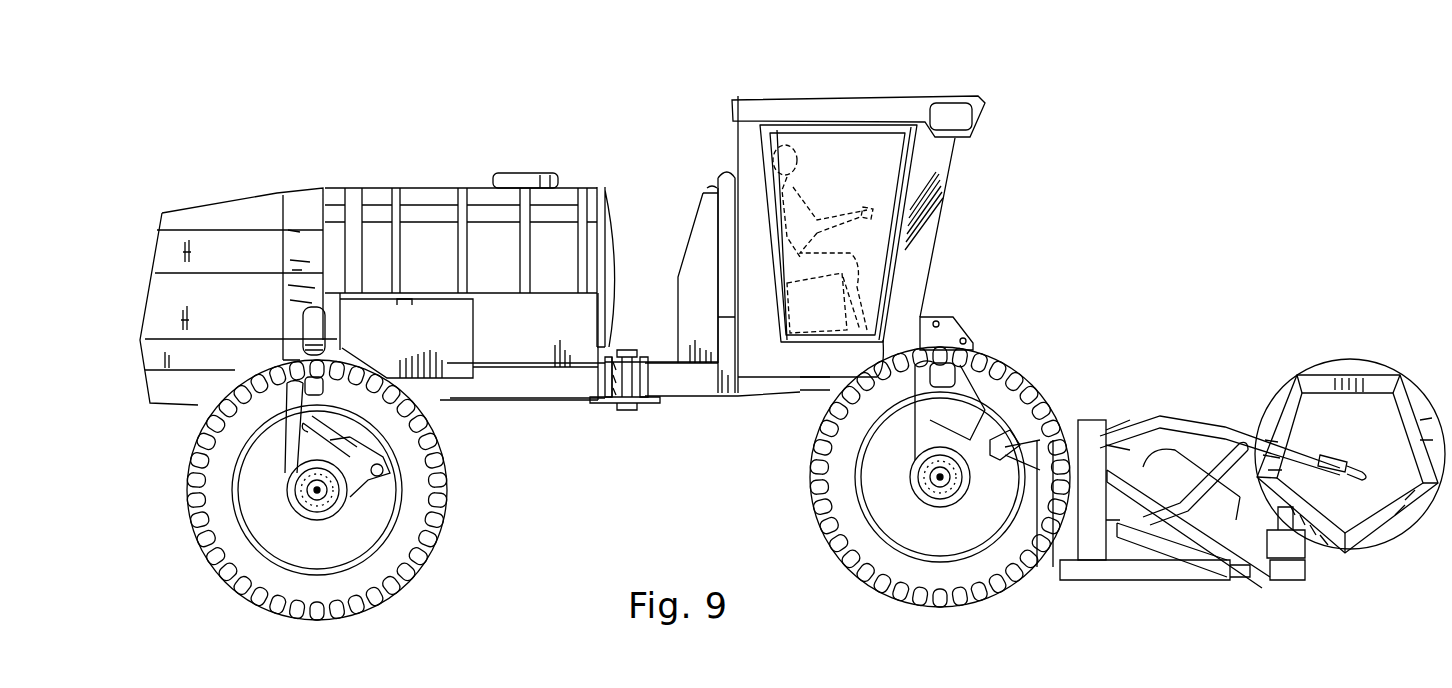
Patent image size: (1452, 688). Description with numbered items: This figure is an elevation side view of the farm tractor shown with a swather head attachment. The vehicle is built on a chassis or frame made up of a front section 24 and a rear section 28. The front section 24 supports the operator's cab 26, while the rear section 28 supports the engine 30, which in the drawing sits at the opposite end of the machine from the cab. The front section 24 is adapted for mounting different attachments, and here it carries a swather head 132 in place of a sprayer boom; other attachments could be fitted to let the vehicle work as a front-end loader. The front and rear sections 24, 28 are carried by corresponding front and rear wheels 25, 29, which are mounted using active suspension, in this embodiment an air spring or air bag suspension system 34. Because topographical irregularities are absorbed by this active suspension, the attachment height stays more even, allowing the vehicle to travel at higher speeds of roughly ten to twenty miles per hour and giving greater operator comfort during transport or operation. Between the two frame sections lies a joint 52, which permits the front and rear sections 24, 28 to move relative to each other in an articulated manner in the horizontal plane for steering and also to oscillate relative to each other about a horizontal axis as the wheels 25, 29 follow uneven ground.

The front section 24 is at (693, 400).
The front wheels 25 is at (843, 553).
The operator's cab 26 is at (844, 93).
The rear section 28 is at (538, 400).
The rear wheels 29 is at (413, 570).
The engine 30 is at (250, 217).
The air spring or air bag suspension system 34 is at (377, 430).
The joint 52 is at (646, 424).
The swather head 132 is at (1175, 417).